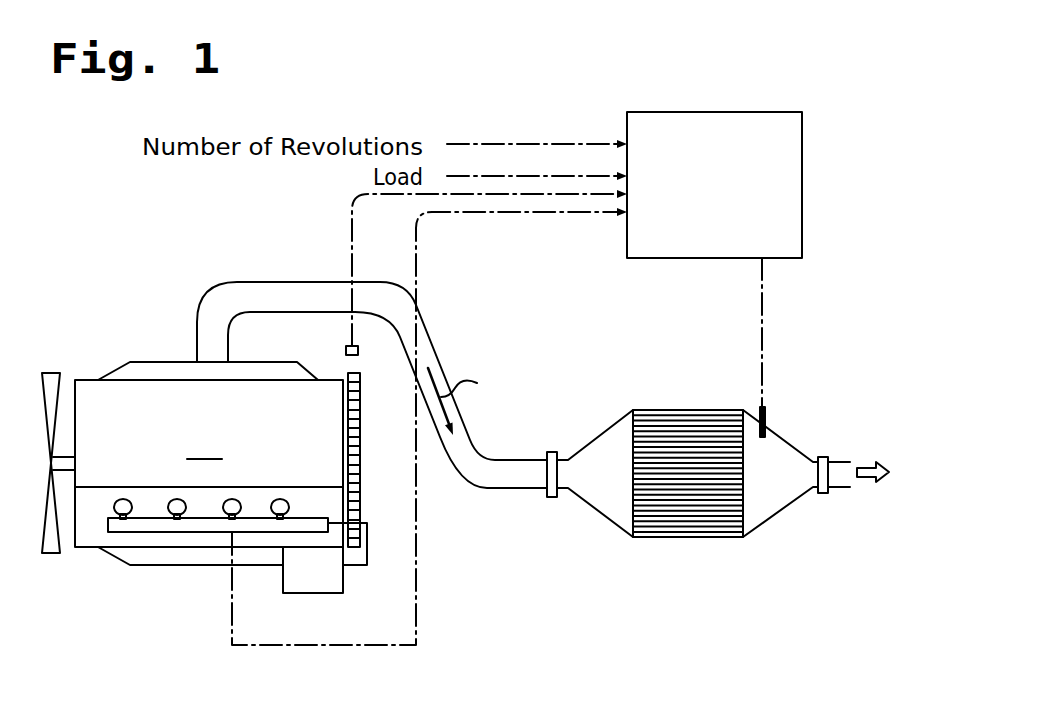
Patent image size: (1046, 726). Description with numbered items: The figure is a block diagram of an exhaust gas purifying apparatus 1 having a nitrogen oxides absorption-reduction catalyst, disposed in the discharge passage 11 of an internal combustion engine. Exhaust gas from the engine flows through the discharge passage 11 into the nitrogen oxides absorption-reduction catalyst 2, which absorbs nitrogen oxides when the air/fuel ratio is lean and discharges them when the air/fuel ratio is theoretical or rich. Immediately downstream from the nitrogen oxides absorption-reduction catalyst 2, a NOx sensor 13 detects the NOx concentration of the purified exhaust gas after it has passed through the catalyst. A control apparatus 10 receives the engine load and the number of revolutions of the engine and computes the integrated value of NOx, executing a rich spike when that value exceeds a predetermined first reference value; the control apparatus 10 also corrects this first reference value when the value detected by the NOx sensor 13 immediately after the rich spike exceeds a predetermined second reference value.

The exhaust gas purifying apparatus 1 is at (832, 270).
The control apparatus 10 is at (780, 110).
The discharge passage 11 is at (528, 470).
The nitrogen oxides absorption-reduction catalyst 2 is at (647, 523).
The NOx sensor 13 is at (766, 412).